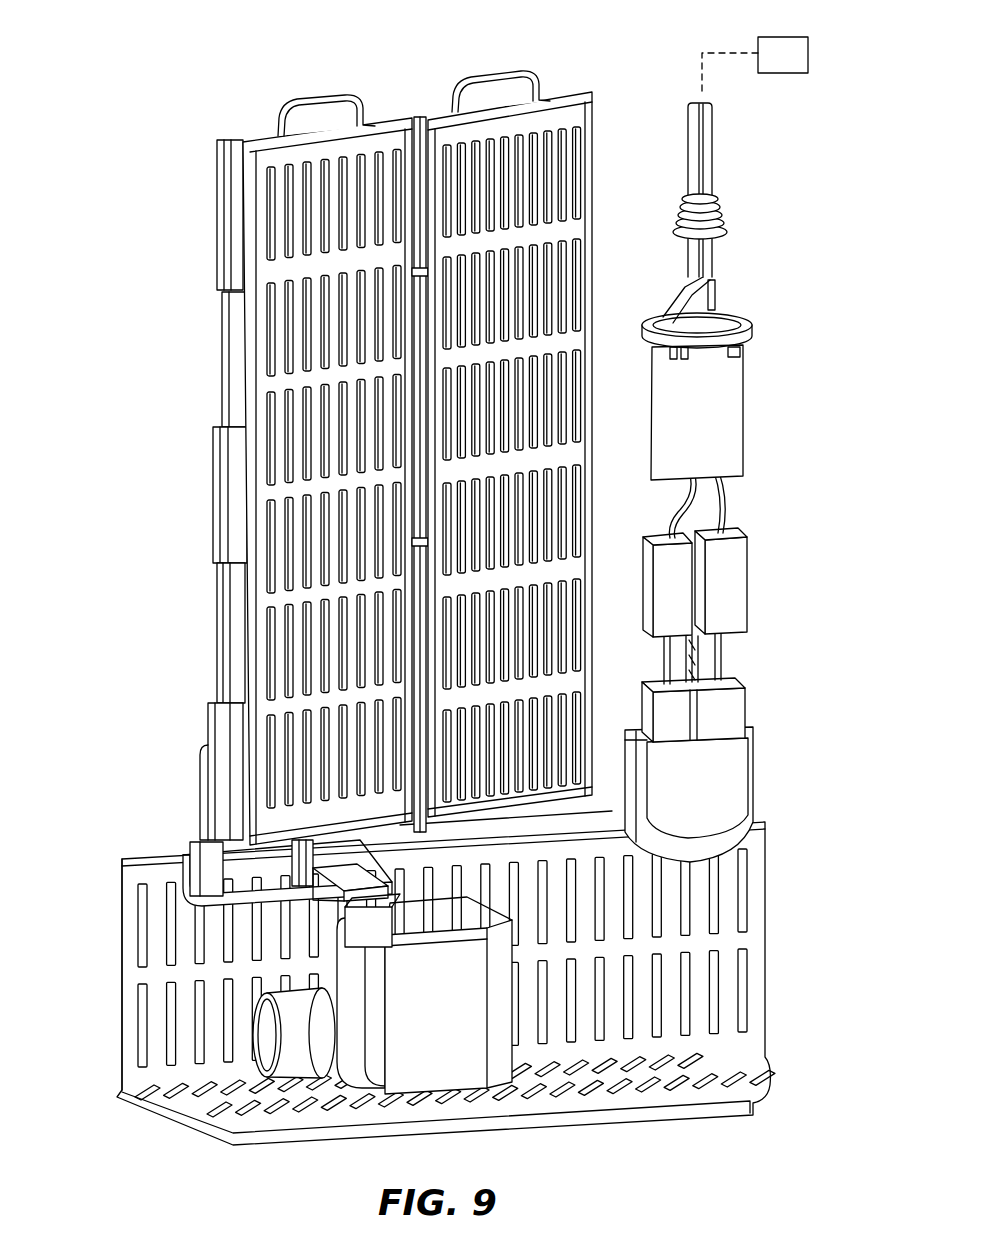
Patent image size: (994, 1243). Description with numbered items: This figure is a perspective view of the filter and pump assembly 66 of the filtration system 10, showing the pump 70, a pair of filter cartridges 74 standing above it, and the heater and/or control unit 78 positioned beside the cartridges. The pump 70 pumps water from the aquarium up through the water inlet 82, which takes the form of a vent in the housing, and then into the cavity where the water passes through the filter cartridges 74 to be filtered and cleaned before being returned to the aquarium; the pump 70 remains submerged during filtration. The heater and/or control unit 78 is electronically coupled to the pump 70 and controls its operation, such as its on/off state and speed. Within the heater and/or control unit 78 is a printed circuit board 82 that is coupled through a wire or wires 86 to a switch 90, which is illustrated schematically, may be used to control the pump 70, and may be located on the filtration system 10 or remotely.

The filtration system 10 is at (439, 596).
The filter and pump assembly 66 is at (193, 438).
The pump 70 is at (455, 1053).
The filter cartridges 74 is at (450, 125).
The heater and/or control unit 78 is at (729, 777).
The printed circuit board 82 is at (717, 405).
The wires 86 is at (708, 166).
The switch 90 is at (783, 73).